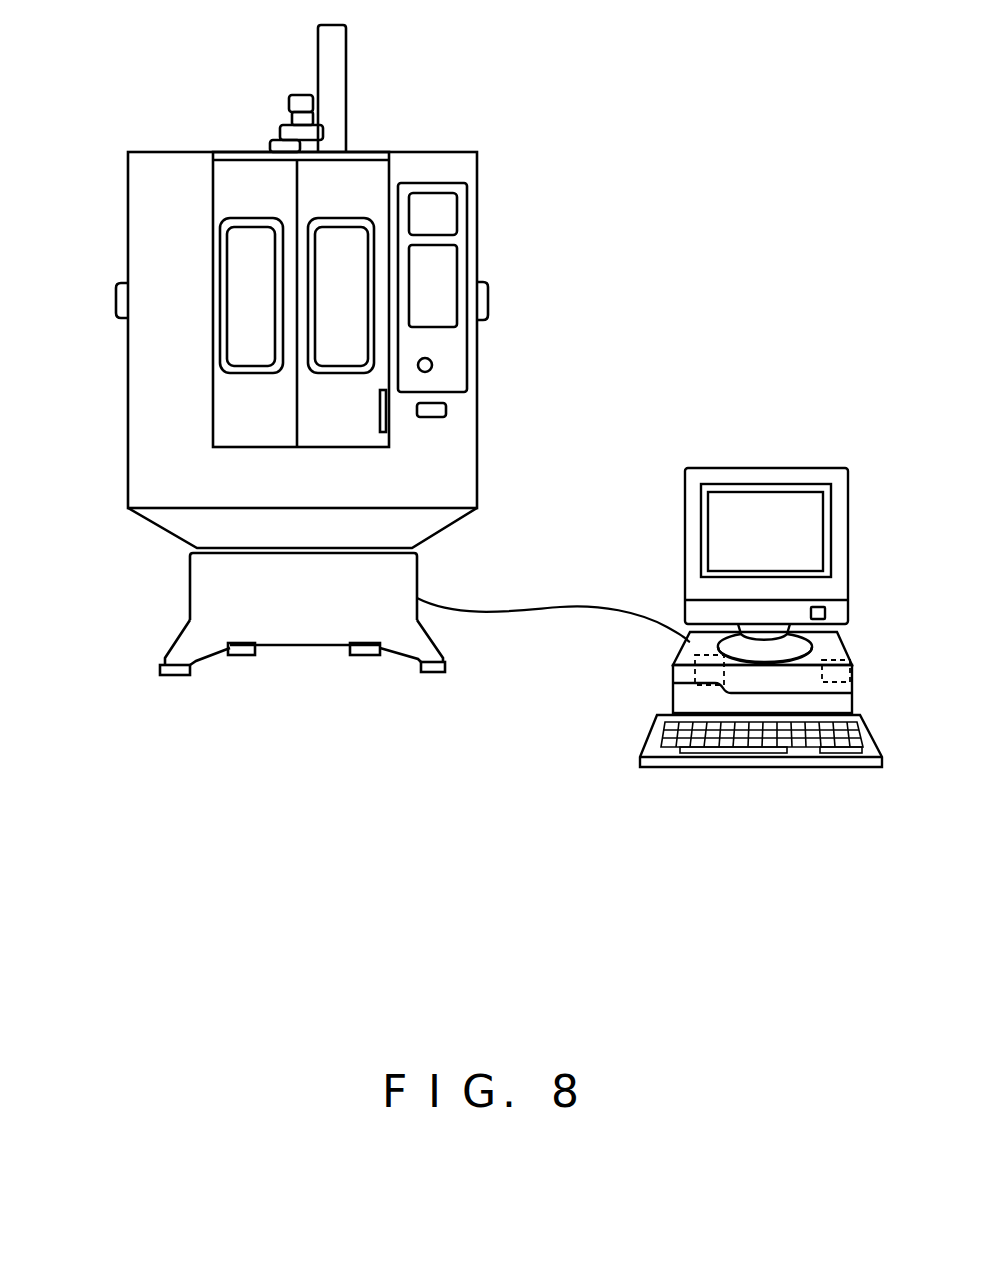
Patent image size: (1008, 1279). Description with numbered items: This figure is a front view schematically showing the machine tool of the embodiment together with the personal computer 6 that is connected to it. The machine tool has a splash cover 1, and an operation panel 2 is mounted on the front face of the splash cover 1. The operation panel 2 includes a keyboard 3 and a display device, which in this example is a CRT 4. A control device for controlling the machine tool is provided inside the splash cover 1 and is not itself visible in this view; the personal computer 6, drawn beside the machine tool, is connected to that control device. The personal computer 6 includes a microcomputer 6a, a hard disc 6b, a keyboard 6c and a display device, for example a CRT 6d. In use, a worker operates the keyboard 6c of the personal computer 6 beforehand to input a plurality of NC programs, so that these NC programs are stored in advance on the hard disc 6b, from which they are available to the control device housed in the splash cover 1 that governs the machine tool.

The splash cover 1 is at (364, 350).
The operation panel 2 is at (482, 300).
The keyboard 3 is at (460, 263).
The CRT 4 is at (458, 207).
The personal computer 6 is at (759, 601).
The microcomputer 6a is at (700, 657).
The hard disc 6b is at (853, 665).
The keyboard 6c is at (718, 744).
The CRT 6d is at (785, 493).